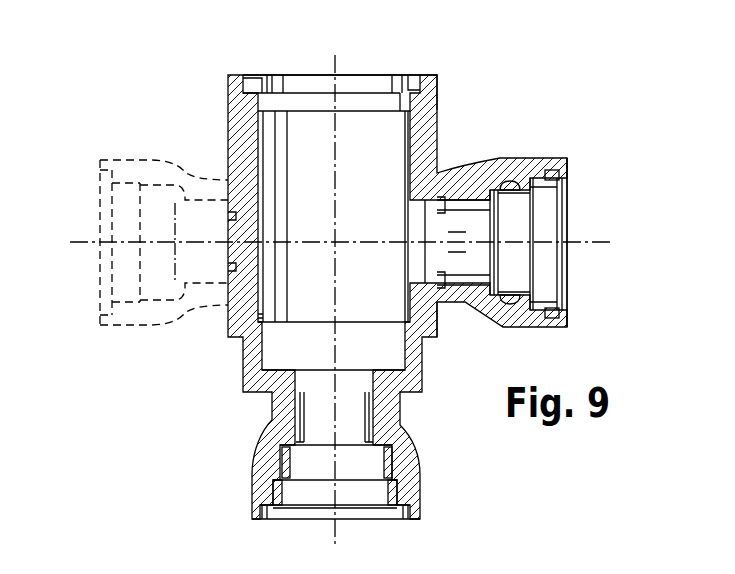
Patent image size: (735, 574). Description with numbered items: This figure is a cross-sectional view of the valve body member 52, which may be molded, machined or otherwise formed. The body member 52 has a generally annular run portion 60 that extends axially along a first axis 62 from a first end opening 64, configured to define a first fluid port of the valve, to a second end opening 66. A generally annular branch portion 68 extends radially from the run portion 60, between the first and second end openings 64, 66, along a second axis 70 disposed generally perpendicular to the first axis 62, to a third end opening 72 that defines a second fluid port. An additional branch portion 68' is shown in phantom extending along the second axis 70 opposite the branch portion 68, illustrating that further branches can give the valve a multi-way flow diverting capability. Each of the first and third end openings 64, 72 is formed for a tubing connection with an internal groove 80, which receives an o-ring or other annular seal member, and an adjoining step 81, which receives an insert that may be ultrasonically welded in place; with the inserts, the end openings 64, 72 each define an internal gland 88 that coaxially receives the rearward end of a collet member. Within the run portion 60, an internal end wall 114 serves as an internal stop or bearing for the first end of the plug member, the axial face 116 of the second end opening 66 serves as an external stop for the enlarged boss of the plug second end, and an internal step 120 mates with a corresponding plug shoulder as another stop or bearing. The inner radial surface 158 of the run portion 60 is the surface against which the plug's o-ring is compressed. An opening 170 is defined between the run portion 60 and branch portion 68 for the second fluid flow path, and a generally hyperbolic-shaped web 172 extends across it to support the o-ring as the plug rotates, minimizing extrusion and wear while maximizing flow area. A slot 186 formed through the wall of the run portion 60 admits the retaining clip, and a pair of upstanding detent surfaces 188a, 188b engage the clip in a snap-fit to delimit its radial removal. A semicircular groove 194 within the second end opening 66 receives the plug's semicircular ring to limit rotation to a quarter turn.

The body member 52 is at (608, 67).
The run portion 60 is at (228, 328).
The first axis 62 is at (333, 71).
The first end opening 64 is at (397, 527).
The second end opening 66 is at (393, 73).
The branch portion 68 is at (519, 197).
The additional branch portion 68' is at (136, 227).
The second axis 70 is at (568, 243).
The third end opening 72 is at (567, 192).
The internal groove 80 is at (505, 183).
The step 81 is at (548, 170).
The internal gland 88 is at (559, 234).
The internal end wall 114 is at (268, 400).
The axial face 116 is at (437, 74).
The internal step 120 is at (250, 330).
The inner radial surface 158 is at (437, 322).
The opening 170 is at (407, 220).
The web 172 is at (420, 275).
The slot 186 is at (283, 93).
The detent surface 188a is at (252, 110).
The detent surface 188b is at (414, 100).
The semicircular groove 194 is at (250, 75).